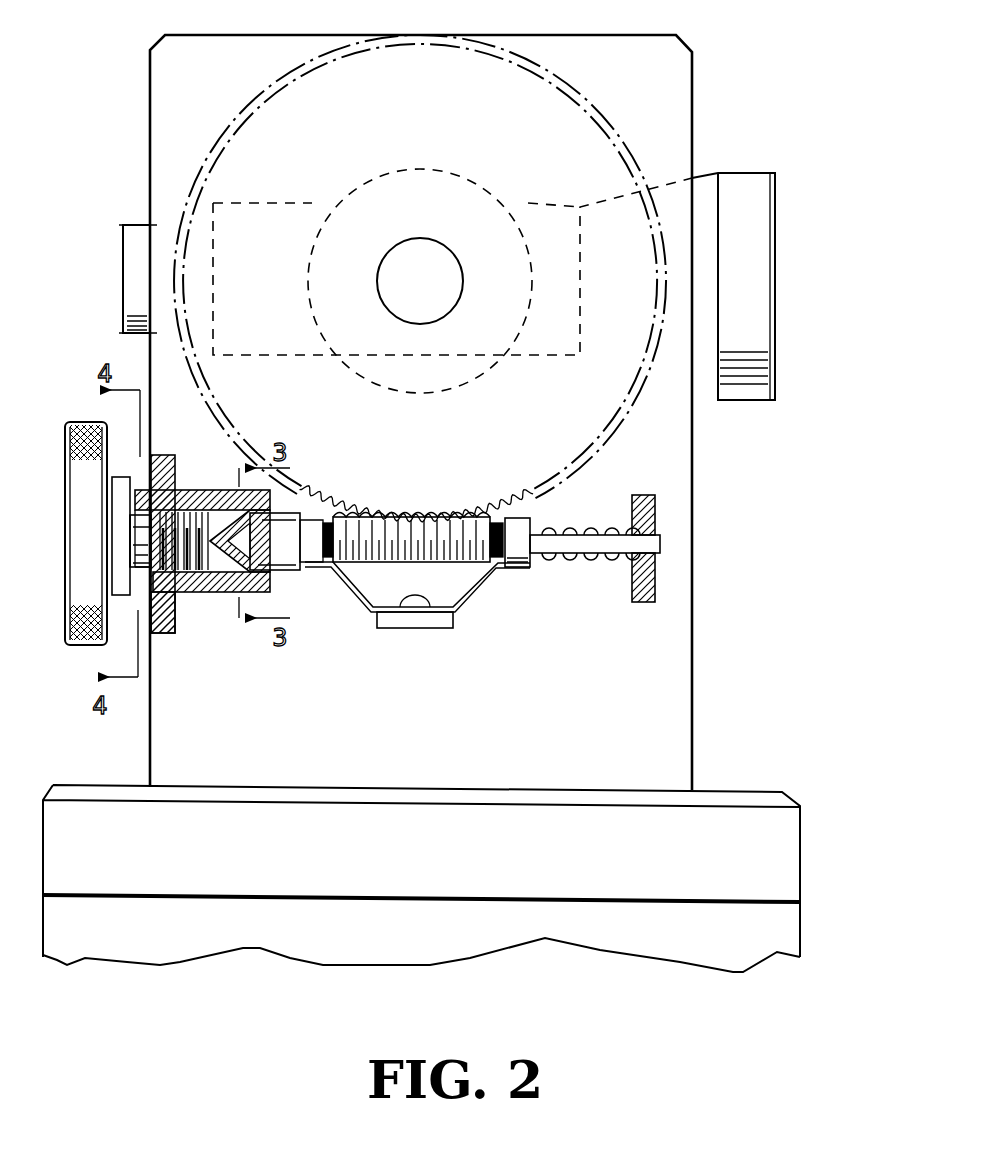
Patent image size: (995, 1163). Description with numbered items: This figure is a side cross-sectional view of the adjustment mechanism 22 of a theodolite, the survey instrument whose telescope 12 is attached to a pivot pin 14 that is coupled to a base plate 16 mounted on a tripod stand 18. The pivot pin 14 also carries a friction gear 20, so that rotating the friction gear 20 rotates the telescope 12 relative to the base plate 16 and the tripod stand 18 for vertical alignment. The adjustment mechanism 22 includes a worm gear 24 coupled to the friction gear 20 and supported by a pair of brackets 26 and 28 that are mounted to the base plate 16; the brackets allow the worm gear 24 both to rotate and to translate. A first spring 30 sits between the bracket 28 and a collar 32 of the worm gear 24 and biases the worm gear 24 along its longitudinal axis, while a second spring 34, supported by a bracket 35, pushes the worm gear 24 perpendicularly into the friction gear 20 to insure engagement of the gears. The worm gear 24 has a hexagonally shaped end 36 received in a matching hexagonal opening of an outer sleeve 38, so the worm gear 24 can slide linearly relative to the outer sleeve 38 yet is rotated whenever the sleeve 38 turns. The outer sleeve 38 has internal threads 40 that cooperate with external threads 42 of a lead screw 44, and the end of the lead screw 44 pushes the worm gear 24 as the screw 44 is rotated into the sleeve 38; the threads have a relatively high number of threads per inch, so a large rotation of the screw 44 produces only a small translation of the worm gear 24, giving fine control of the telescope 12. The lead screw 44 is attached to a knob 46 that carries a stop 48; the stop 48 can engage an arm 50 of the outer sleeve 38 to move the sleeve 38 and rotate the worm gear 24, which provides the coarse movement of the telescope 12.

The telescope 12 is at (706, 186).
The pivot pin 14 is at (420, 281).
The base plate 16 is at (674, 729).
The tripod stand 18 is at (726, 781).
The friction gear 20 is at (433, 278).
The adjustment mechanism 22 is at (610, 481).
The worm gear 24 is at (437, 547).
The bracket 26 is at (168, 635).
The bracket 28 is at (636, 603).
The first spring 30 is at (572, 562).
The collar 32 is at (521, 530).
The second spring 34 is at (368, 608).
The bracket 35 is at (425, 620).
The hexagonally shaped end 36 is at (287, 540).
The outer sleeve 38 is at (207, 490).
The internal threads 40 is at (184, 497).
The external threads 42 is at (210, 600).
The lead screw 44 is at (203, 597).
The knob 46 is at (87, 647).
The stop 48 is at (140, 535).
The arm 50 is at (147, 497).